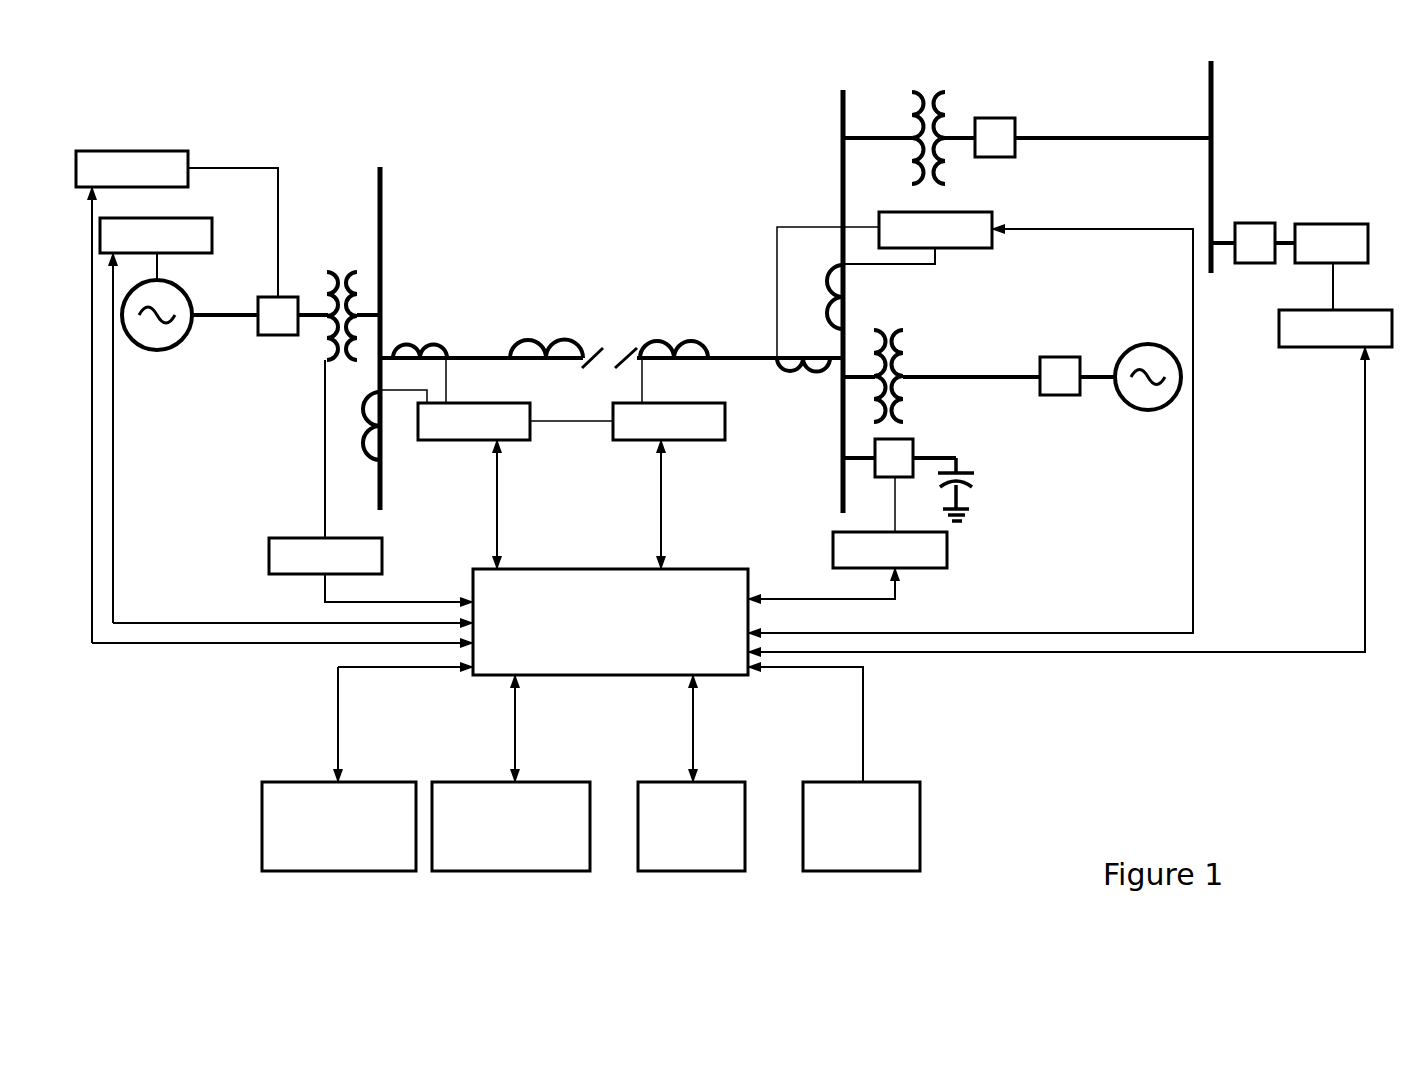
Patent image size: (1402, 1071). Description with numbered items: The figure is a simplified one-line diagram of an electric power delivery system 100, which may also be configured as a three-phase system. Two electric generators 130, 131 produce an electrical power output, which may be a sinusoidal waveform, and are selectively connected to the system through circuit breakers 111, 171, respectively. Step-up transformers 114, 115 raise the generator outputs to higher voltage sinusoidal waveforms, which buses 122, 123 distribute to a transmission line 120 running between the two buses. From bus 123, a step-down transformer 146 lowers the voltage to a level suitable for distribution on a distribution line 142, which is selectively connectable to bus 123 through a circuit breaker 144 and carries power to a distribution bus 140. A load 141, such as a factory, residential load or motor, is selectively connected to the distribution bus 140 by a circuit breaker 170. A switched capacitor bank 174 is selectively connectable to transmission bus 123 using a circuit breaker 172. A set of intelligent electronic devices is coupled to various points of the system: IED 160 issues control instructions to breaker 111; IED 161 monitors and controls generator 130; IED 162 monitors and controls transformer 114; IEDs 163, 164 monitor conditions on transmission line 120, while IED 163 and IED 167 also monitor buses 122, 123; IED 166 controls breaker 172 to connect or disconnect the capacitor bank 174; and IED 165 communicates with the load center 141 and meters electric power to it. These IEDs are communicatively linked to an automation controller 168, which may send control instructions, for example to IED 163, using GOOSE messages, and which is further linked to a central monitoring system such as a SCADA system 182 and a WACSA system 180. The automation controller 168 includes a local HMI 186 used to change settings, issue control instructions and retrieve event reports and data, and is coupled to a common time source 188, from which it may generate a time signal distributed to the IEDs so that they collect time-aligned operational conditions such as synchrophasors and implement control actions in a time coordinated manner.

The electric power delivery system 100 is at (593, 150).
The circuit breaker 111 is at (275, 336).
The step-up transformer 114 is at (352, 272).
The step-up transformer 115 is at (905, 333).
The transmission line 120 is at (474, 356).
The bus 122 is at (382, 197).
The bus 123 is at (835, 443).
The electric generator 130 is at (180, 290).
The electric generator 131 is at (1140, 411).
The distribution bus 140 is at (1213, 148).
The load 141 is at (1333, 224).
The distribution line 142 is at (1097, 138).
The circuit breaker 144 is at (990, 118).
The step-down transformer 146 is at (924, 92).
The IED 160 is at (145, 151).
The IED 161 is at (185, 218).
The IED 162 is at (296, 537).
The IED 163 is at (478, 441).
The IED 164 is at (650, 441).
The IED 165 is at (1300, 347).
The IED 166 is at (833, 541).
The IED 167 is at (938, 212).
The automation controller 168 is at (728, 505).
The circuit breaker 170 is at (1258, 223).
The circuit breaker 171 is at (1058, 357).
The circuit breaker 172 is at (905, 439).
The switched capacitor bank 174 is at (962, 473).
The WACSA system 180 is at (362, 872).
The SCADA system 182 is at (487, 872).
The local HMI 186 is at (737, 872).
The common time source 188 is at (862, 872).